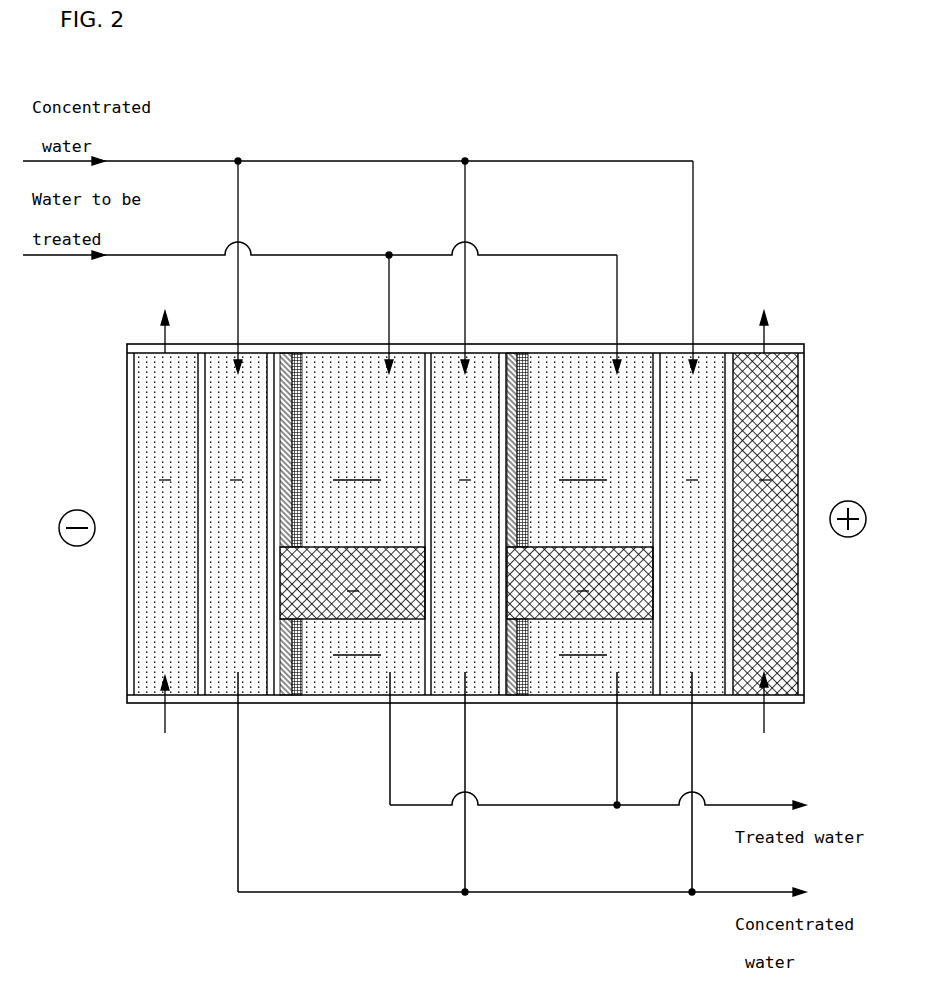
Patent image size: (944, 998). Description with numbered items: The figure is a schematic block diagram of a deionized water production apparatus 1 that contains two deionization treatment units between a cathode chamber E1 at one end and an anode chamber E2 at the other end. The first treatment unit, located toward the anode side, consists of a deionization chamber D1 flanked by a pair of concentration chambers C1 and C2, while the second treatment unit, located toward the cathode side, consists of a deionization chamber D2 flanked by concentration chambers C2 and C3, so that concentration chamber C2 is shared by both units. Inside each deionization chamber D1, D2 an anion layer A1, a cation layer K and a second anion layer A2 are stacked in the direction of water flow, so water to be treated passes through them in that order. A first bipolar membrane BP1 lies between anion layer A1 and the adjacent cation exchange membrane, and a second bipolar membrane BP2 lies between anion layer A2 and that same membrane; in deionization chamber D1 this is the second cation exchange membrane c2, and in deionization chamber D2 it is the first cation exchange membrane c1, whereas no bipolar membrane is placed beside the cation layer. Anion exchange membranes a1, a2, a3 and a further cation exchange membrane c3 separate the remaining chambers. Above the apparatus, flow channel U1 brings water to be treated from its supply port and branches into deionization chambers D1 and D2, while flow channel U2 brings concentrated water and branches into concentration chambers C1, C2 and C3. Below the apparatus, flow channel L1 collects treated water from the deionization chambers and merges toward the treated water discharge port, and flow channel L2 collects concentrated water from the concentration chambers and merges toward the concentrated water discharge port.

The electrodeionization apparatus 1 is at (127, 378).
The flow channel U1 is at (205, 255).
The flow channel U2 is at (380, 161).
The cathode chamber E1 is at (147, 344).
The anode chamber E2 is at (788, 360).
The concentration chamber C1 is at (713, 362).
The concentration chamber C2 is at (437, 345).
The concentration chamber C3 is at (205, 345).
The deionization chamber D1 is at (575, 345).
The deionization chamber D2 is at (335, 347).
The first bipolar membrane BP1 is at (313, 300).
The second bipolar membrane BP2 is at (286, 695).
The anion exchange membrane a1 is at (187, 703).
The anion exchange membrane a2 is at (413, 703).
The anion exchange membrane a3 is at (640, 703).
The first cation exchange membrane c1 is at (252, 703).
The second cation exchange membrane c2 is at (474, 703).
The cation exchange membrane c3 is at (708, 703).
The flow channel L1 is at (390, 762).
The flow channel L2 is at (380, 892).